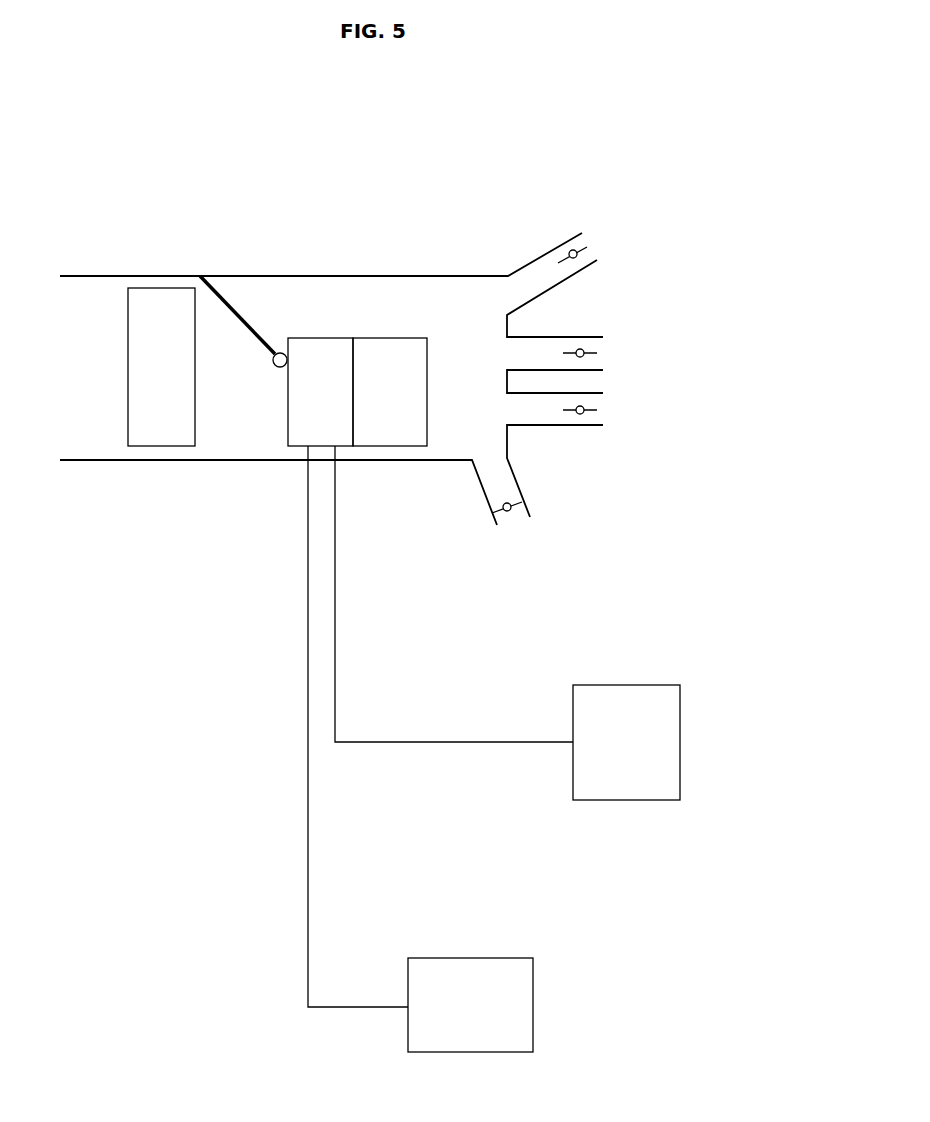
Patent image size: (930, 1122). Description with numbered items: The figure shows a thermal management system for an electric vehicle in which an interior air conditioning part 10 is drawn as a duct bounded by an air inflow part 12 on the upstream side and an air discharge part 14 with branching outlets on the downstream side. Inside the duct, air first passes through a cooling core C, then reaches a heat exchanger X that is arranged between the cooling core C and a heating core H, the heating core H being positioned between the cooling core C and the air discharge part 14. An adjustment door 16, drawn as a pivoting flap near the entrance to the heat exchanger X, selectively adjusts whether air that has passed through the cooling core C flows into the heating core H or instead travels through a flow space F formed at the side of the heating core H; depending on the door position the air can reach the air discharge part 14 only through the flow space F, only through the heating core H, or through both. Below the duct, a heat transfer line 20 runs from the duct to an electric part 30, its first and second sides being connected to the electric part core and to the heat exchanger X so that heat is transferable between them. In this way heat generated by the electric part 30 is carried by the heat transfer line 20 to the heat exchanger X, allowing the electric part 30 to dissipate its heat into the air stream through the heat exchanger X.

The interior air conditioning part 10 is at (497, 258).
The air inflow part 12 is at (82, 385).
The air discharge part 14 is at (471, 374).
The adjustment door 16 is at (237, 302).
The heat transfer line 20 is at (308, 675).
The electric part 30 is at (623, 793).
The cooling core C is at (147, 300).
The flow space F is at (372, 312).
The heating core H is at (393, 438).
The heat exchanger X is at (298, 424).